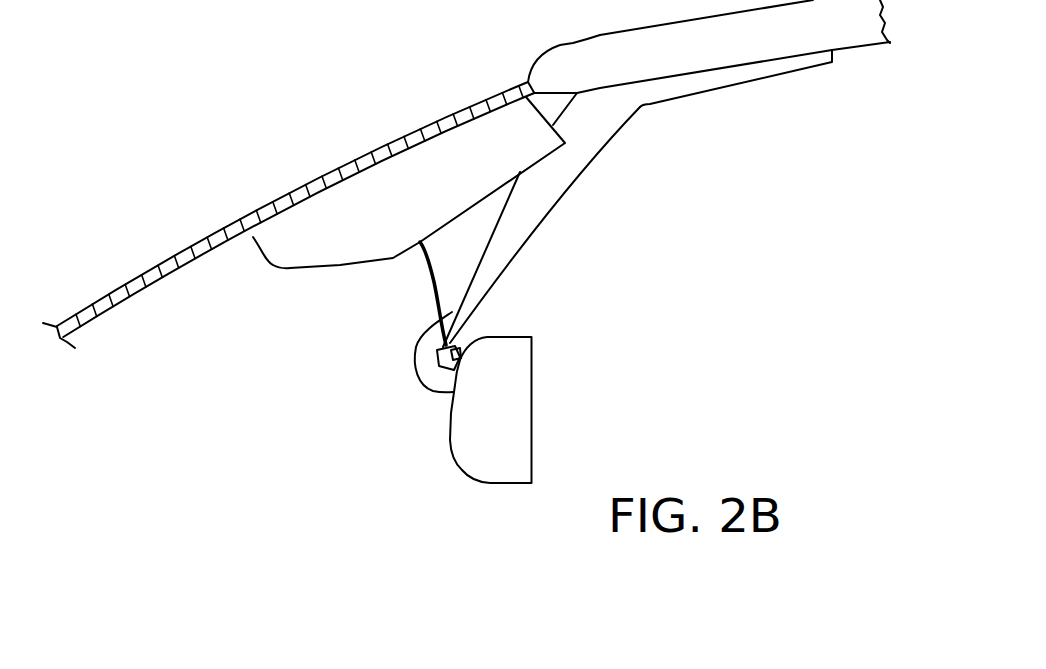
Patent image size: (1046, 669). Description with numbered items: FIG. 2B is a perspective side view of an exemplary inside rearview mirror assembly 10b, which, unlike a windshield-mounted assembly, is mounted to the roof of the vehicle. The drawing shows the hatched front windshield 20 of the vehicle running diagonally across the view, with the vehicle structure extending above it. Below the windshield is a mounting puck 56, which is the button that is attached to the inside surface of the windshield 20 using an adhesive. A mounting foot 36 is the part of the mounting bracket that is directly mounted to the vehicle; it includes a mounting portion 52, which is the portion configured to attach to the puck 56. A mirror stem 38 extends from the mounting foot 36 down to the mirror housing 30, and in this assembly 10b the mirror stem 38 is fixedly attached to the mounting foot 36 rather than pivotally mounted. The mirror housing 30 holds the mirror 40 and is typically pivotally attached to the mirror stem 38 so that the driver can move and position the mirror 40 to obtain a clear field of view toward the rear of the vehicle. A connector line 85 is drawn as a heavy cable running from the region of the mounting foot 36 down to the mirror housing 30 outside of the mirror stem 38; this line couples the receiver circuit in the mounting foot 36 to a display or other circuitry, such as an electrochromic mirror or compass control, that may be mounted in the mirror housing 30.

The front windshield 20 is at (200, 251).
The mounting foot 36 is at (722, 121).
The mounting portion 52 is at (790, 62).
The mirror stem 38 is at (511, 242).
The mounting puck 56 is at (302, 254).
The connector line 85 is at (427, 267).
The mirror 40 is at (534, 453).
The mirror housing 30 is at (455, 452).
The rearview mirror assembly 10b is at (323, 482).